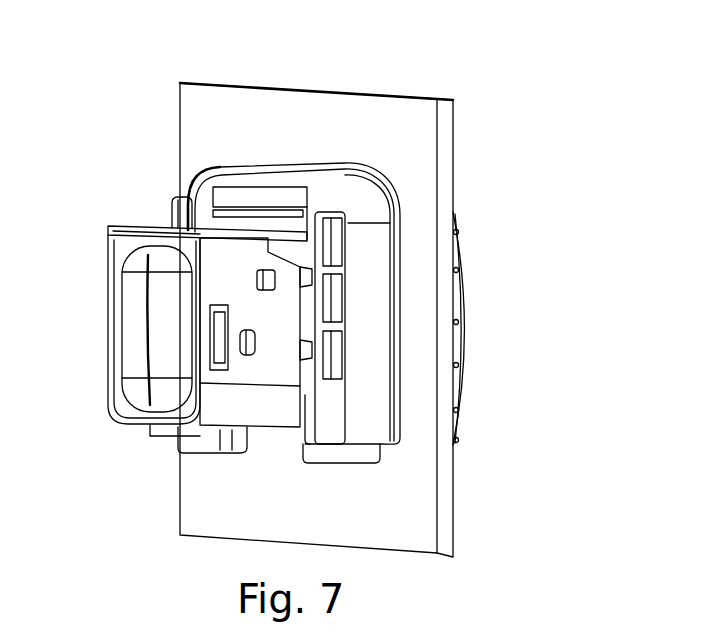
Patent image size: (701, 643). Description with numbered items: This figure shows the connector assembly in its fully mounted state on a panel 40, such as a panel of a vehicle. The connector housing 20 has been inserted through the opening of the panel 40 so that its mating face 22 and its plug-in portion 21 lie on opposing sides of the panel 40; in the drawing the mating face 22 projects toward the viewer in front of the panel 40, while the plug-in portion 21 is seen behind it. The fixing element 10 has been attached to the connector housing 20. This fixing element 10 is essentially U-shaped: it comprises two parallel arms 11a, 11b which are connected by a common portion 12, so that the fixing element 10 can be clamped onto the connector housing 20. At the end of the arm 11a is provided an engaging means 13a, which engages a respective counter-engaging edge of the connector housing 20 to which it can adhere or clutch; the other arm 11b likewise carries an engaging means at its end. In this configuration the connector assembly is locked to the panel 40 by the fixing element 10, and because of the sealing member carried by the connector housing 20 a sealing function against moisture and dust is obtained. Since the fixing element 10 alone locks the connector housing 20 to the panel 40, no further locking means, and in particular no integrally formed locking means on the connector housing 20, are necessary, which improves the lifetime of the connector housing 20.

The fixing element 10 is at (313, 153).
The arm 11a is at (197, 218).
The arm 11b is at (362, 355).
The common portion 12 is at (228, 180).
The engaging means 13a is at (198, 436).
The connector housing 20 is at (100, 350).
The plug-in portion 21 is at (463, 303).
The mating face 22 is at (123, 295).
The panel 40 is at (400, 134).